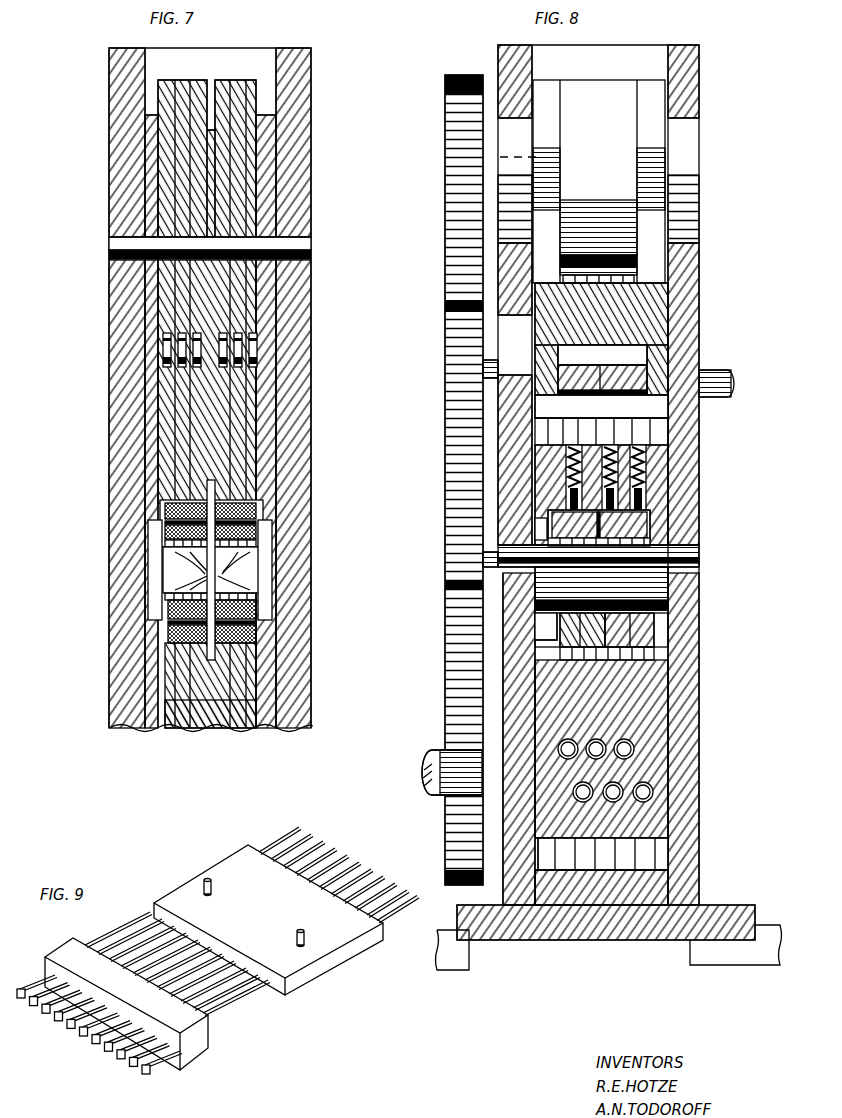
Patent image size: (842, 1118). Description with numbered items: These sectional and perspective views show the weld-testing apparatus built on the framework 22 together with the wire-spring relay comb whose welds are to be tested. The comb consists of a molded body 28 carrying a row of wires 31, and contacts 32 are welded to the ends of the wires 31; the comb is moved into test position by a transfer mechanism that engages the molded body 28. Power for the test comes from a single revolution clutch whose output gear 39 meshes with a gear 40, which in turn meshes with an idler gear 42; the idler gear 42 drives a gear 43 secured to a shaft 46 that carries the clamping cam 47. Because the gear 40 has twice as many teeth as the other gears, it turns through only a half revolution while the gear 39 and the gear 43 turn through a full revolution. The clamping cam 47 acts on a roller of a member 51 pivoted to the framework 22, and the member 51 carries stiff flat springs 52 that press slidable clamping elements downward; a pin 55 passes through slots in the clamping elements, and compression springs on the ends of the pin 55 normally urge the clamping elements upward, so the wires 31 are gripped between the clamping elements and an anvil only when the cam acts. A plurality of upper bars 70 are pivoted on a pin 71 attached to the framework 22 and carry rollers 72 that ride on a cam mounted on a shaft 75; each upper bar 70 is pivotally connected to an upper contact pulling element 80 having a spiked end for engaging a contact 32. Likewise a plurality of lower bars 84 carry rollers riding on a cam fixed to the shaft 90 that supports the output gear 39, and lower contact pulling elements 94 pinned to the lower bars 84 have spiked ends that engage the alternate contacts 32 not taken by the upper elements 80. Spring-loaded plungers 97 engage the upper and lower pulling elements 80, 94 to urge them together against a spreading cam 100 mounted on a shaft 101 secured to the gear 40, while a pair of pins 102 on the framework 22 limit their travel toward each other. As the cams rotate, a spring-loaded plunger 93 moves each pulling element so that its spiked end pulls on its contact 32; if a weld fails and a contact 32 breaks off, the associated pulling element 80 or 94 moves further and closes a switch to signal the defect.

In FIG. 7, the framework 22 is at (291, 425).
In FIG. 8, the framework 22 is at (682, 733).
In FIG. 9, the molded body 28 is at (228, 877).
In FIG. 9, the wires 31 is at (228, 1017).
In FIG. 9, the contacts 32 is at (112, 1043).
In FIG. 8, the output gear 39 is at (460, 828).
In FIG. 8, the gear 40 is at (460, 638).
In FIG. 8, the idler gear 42 is at (460, 352).
In FIG. 8, the gear 43 is at (456, 192).
In FIG. 8, the shaft 46 is at (488, 162).
In FIG. 8, the clamping cam 47 is at (640, 270).
In FIG. 8, the member 51 is at (630, 318).
In FIG. 8, the stiff flat springs 52 is at (645, 364).
In FIG. 7, the pin 55 is at (213, 570).
In FIG. 7, the upper bars 70 is at (265, 476).
In FIG. 8, the upper bars 70 is at (636, 440).
In FIG. 7, the pin 71 is at (290, 243).
In FIG. 7, the rollers 72 is at (263, 361).
In FIG. 8, the shaft 75 is at (495, 378).
In FIG. 7, the upper contact pulling element 80 is at (262, 524).
In FIG. 8, the upper contact pulling element 80 is at (641, 541).
In FIG. 7, the lower bars 84 is at (242, 730).
In FIG. 8, the lower bars 84 is at (641, 859).
In FIG. 8, the shaft 90 is at (440, 763).
In FIG. 8, the spring-loaded plunger 93 is at (645, 790).
In FIG. 7, the lower contact pulling elements 94 is at (263, 626).
In FIG. 8, the lower contact pulling elements 94 is at (641, 633).
In FIG. 8, the spring-loaded plungers 97 is at (648, 505).
In FIG. 8, the spreading cam 100 is at (640, 592).
In FIG. 8, the shaft 101 is at (495, 566).
In FIG. 8, the pins 102 is at (655, 555).